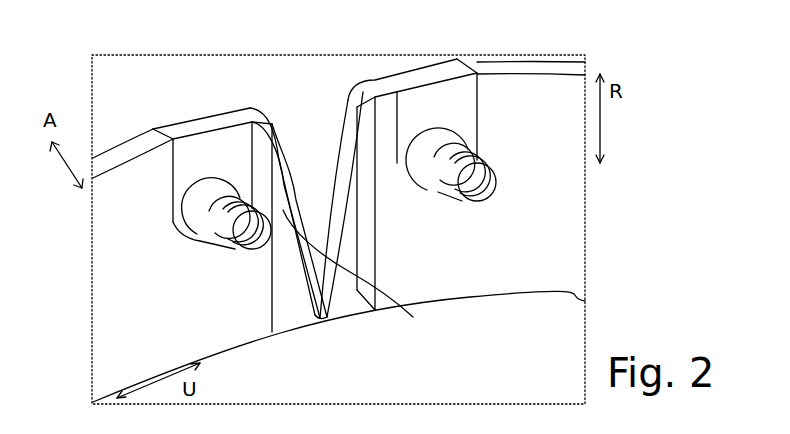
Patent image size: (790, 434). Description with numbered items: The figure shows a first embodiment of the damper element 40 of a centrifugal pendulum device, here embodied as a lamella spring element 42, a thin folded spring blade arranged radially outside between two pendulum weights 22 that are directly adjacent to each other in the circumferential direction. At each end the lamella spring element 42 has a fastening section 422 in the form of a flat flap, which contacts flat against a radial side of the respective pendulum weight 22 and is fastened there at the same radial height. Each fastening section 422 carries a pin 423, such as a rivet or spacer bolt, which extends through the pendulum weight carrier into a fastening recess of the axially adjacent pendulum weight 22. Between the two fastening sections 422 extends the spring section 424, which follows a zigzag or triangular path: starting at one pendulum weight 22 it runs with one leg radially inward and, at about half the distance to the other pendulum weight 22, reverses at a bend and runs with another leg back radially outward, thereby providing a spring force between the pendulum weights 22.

The pendulum weight 22 is at (114, 265).
The damper element 40 is at (336, 198).
The lamella spring element 42 is at (336, 198).
The fastening section 422 is at (237, 98).
The pin 423 is at (193, 226).
The spring section 424 is at (380, 318).